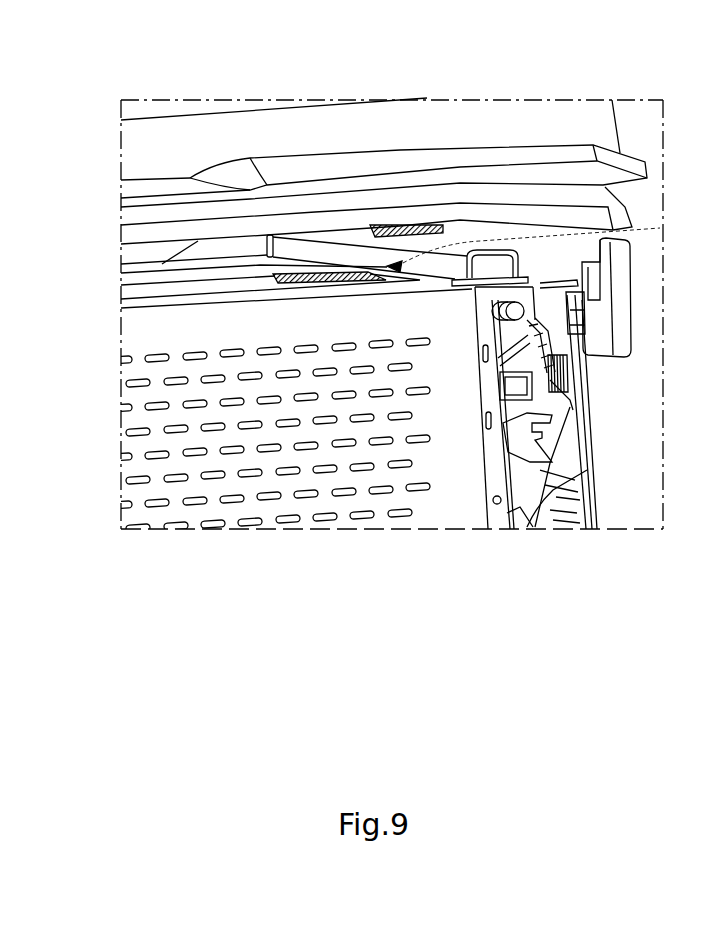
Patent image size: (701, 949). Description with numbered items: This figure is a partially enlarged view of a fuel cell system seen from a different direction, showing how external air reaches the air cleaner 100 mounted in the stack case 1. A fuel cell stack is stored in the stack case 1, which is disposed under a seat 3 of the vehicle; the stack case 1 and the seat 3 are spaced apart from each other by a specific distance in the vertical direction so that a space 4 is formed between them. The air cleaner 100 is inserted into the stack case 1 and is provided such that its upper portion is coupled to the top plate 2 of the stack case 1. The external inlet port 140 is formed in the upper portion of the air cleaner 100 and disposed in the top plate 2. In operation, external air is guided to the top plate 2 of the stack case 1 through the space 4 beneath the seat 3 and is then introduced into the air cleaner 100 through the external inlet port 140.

The stack case 1 is at (80, 182).
The top plate 2 is at (213, 262).
The seat 3 is at (168, 150).
The space 4 is at (500, 229).
The air cleaner 100 is at (258, 284).
The external inlet port 140 is at (290, 275).